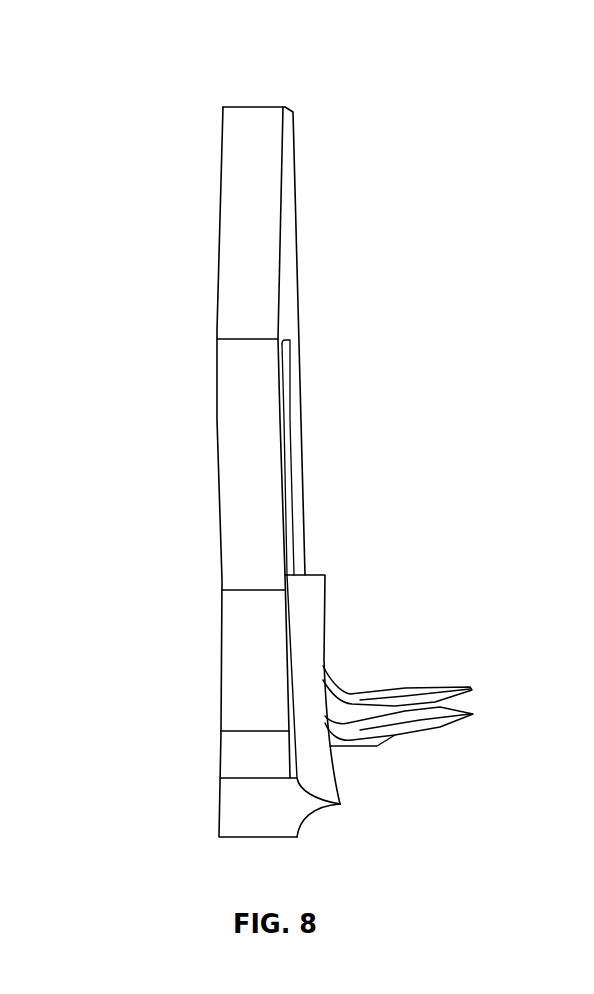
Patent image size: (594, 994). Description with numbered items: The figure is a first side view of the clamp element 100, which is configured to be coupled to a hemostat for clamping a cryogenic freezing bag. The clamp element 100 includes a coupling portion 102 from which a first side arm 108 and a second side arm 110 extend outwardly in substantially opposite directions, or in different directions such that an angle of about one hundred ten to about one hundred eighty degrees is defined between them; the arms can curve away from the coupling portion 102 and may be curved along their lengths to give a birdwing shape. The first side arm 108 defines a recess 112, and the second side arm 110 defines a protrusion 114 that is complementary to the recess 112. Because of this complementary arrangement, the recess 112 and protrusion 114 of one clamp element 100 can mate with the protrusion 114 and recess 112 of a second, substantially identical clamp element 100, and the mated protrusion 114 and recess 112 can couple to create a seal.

The clamp element 100 is at (113, 48).
The coupling portion 102 is at (228, 283).
The first side arm 108 is at (407, 692).
The second side arm 110 is at (230, 750).
The recess 112 is at (430, 713).
The protrusion 114 is at (308, 803).